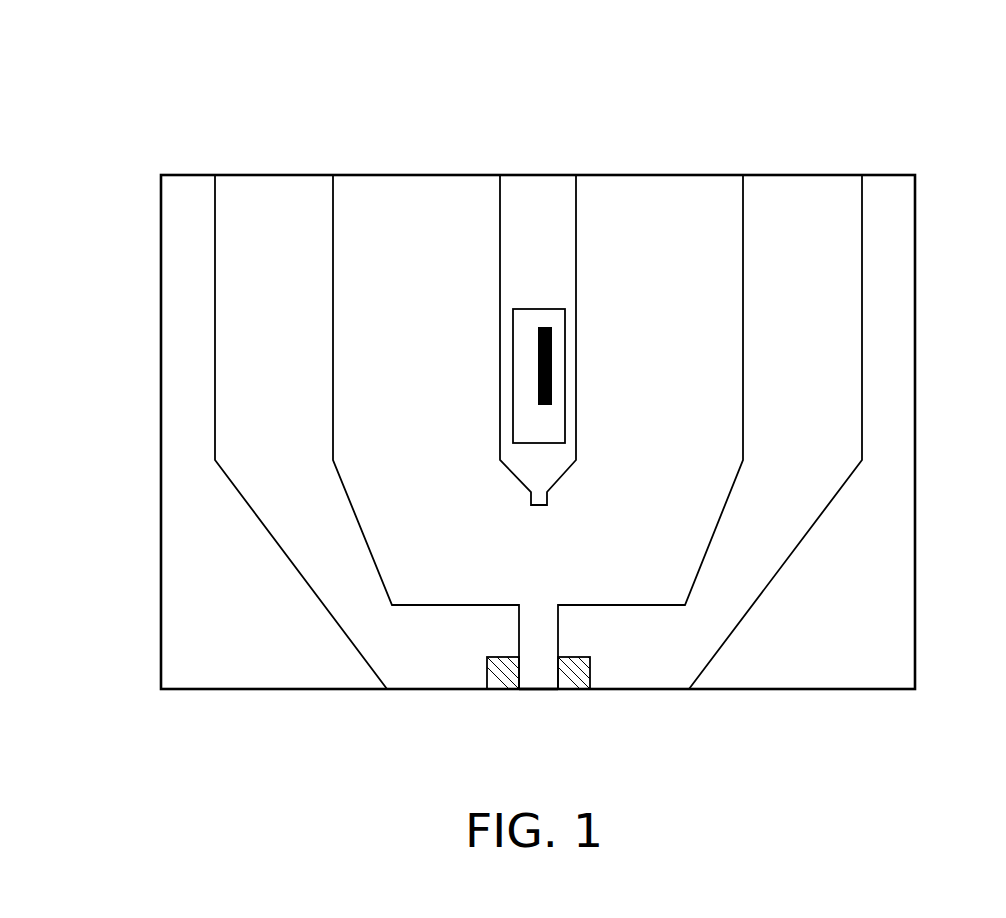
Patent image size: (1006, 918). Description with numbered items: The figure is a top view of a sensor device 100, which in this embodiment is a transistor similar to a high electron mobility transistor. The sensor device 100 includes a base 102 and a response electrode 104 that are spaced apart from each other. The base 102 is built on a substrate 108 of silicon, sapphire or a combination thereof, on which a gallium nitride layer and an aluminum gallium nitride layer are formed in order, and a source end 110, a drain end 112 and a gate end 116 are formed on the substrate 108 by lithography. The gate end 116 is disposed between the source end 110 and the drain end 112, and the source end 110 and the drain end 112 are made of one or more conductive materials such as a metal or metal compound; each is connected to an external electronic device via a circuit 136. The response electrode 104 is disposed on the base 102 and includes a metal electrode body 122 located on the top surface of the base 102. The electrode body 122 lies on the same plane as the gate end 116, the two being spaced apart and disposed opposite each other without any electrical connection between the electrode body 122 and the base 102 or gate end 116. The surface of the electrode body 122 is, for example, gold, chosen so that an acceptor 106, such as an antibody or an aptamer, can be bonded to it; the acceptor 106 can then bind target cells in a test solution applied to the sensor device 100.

The sensor device 100 is at (888, 112).
The base 102 is at (750, 715).
The response electrode 104 is at (489, 262).
The acceptor 106 is at (553, 348).
The substrate 108 is at (373, 501).
The source end 110 is at (508, 681).
The drain end 112 is at (568, 681).
The gate end 116 is at (540, 681).
The electrode body 122 is at (542, 192).
The circuit 136 is at (277, 192).